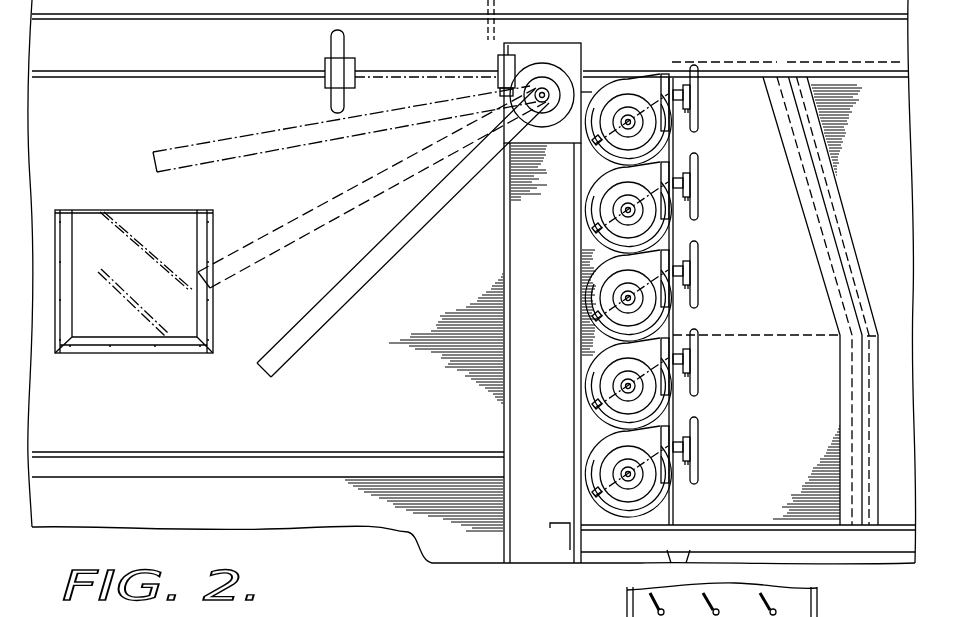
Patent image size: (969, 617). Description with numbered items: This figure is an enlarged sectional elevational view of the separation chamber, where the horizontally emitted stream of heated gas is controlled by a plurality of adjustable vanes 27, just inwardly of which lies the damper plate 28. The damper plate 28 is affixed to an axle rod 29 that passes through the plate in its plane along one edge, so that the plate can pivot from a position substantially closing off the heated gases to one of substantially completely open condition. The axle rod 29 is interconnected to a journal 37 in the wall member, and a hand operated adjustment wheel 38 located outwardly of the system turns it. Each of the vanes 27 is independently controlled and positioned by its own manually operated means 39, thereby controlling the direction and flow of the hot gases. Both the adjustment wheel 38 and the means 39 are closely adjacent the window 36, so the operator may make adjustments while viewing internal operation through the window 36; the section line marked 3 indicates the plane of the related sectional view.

The section line 3- 3 is at (193, 295).
The adjustable vanes 27 is at (668, 140).
The damper plate 28 is at (323, 148).
The axle rod 29 is at (548, 90).
The window 36 is at (86, 218).
The journal 37 is at (500, 50).
The hand operated adjustment wheel 38 is at (331, 44).
The manually operated means 39 is at (699, 257).